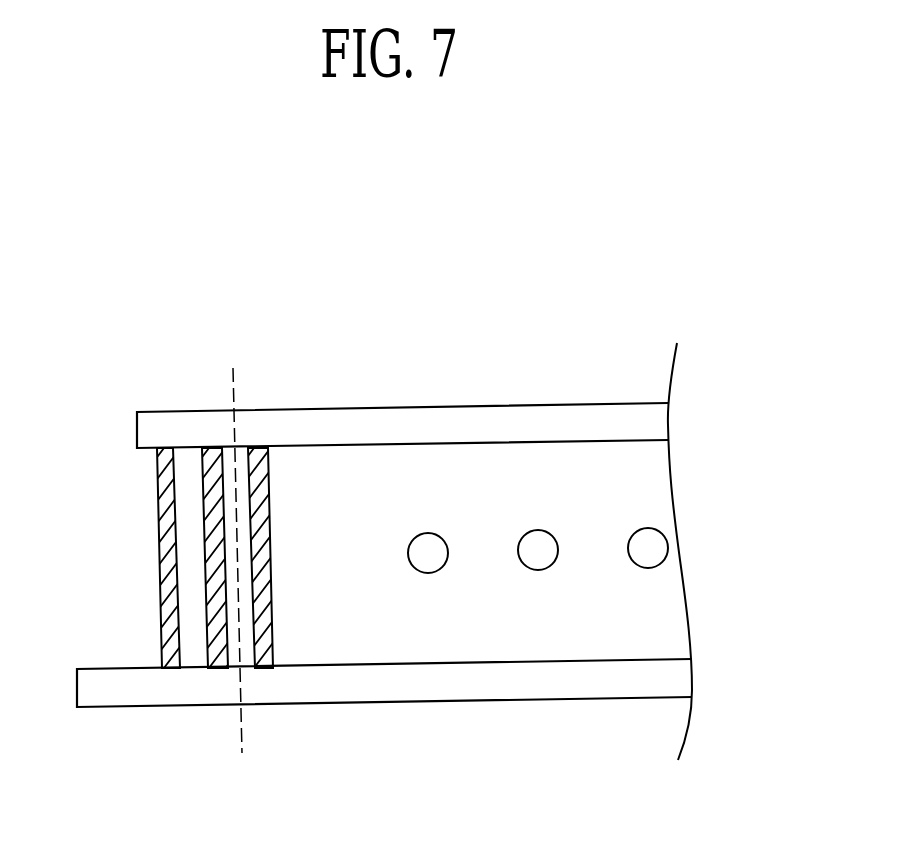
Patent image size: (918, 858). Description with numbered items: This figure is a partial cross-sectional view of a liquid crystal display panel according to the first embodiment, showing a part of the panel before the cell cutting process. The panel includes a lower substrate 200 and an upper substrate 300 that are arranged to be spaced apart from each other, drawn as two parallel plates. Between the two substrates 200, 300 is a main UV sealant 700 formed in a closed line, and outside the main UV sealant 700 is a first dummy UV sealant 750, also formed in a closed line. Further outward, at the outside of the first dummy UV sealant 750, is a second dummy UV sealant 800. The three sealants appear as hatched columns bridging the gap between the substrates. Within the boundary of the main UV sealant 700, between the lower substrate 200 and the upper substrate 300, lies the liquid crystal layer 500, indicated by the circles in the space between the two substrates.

The lower substrate 200 is at (108, 690).
The upper substrate 300 is at (657, 422).
The liquid crystal layer 500 is at (660, 547).
The main UV sealant 700 is at (270, 647).
The first dummy UV sealant 750 is at (200, 668).
The second dummy UV sealant 800 is at (162, 622).